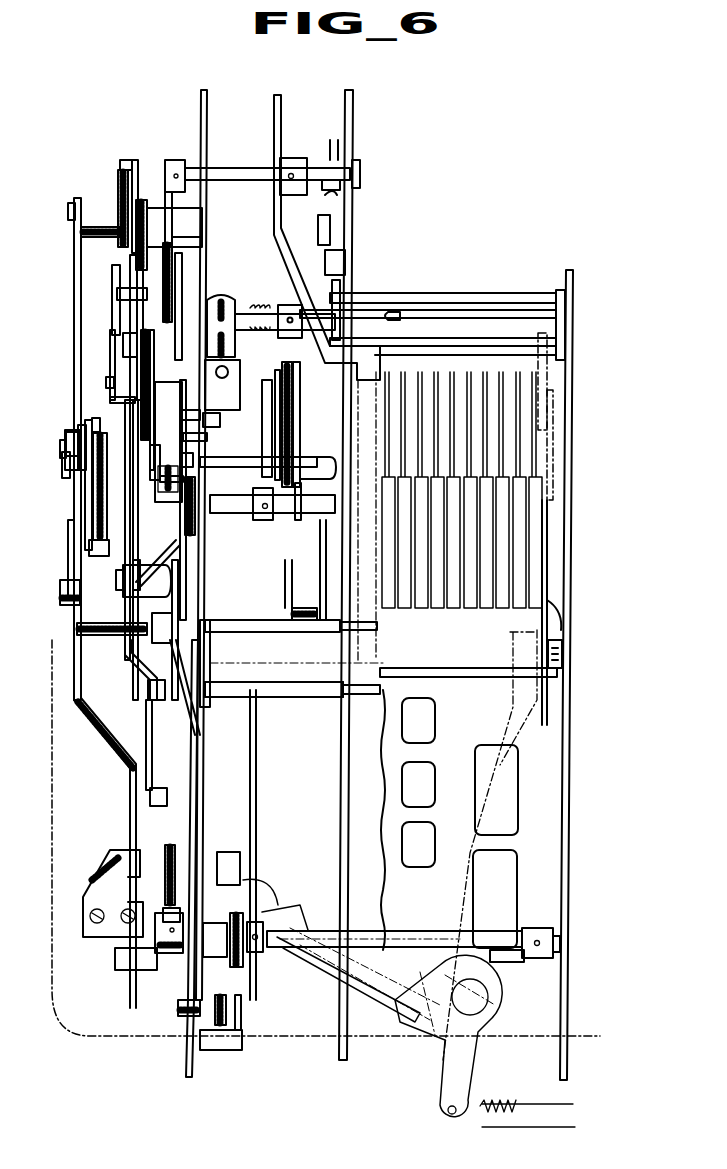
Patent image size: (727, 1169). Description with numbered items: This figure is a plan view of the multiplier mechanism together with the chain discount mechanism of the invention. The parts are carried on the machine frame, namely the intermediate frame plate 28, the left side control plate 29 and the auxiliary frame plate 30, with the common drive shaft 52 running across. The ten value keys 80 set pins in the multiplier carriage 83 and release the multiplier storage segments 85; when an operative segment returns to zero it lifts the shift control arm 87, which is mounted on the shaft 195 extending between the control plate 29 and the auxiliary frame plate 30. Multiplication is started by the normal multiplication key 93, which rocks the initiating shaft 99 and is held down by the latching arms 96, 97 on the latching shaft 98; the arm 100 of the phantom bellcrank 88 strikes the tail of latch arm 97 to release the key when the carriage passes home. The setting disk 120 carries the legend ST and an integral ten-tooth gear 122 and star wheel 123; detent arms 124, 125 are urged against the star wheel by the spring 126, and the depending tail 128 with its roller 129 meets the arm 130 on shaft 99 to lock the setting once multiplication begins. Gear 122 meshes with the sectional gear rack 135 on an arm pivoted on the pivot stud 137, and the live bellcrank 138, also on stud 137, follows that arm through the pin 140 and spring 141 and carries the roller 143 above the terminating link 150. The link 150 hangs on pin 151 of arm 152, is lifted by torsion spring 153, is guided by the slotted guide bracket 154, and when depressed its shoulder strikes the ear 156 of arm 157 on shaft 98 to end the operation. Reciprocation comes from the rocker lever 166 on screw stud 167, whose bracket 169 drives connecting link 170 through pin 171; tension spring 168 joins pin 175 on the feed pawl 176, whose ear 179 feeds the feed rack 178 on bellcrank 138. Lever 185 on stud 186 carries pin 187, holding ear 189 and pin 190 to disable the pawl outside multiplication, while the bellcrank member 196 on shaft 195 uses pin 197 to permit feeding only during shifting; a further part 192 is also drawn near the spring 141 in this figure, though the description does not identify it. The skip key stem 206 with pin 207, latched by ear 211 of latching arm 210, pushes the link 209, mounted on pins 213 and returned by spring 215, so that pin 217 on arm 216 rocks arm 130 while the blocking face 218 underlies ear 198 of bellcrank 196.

The intermediate frame plate 28 is at (566, 1032).
The left side control plate 29 is at (196, 1070).
The auxiliary frame plate 30 is at (350, 133).
The drive shaft 52 is at (390, 316).
The value keys 80 is at (440, 716).
The multiplier carriage 83 is at (559, 470).
The multiplier storage segment 85 is at (550, 382).
The shift control arm 87 is at (300, 268).
The bellcrank 88 is at (500, 1000).
The normal multiplication key 93 is at (487, 878).
The latching arm 96 is at (515, 970).
The latching arm 97 is at (215, 948).
The latching shaft 98 is at (374, 936).
The initiating shaft 99 is at (305, 699).
The arm of bellcrank 100 is at (348, 980).
The setting disk 120 is at (183, 388).
The ten-tooth gear 122 is at (150, 482).
The star wheel 123 is at (196, 440).
The detent arm 124 is at (196, 502).
The detent arm 125 is at (186, 540).
The spring 126 is at (200, 470).
The depending tail 128 is at (165, 536).
The roller 129 is at (135, 562).
The arm 130 is at (125, 655).
The sectional gear rack 135 is at (152, 372).
The pivot stud 137 is at (67, 447).
The bellcrank 138 is at (85, 506).
The pin 140 is at (93, 421).
The spring 141 is at (95, 516).
The roller 143 is at (68, 600).
The terminating link 150 is at (112, 770).
The pin 151 is at (62, 467).
The arm 152 is at (78, 432).
The torsion spring 153 is at (68, 559).
The slotted guide bracket 154 is at (96, 874).
The ear 156 is at (115, 964).
The arm 157 is at (160, 955).
The rocker lever 166 is at (143, 200).
The screw stud 167 is at (177, 224).
The tension spring 168 is at (120, 198).
The bracket 169 is at (98, 236).
The connecting link 170 is at (74, 282).
The pin 171 is at (68, 212).
The pin 175 is at (125, 170).
The feed pawl 176 is at (130, 266).
The feed rack 178 is at (112, 312).
The ear 179 is at (106, 381).
The lever 185 is at (146, 724).
The stud 186 is at (123, 585).
The pin 187 is at (158, 808).
The ear 189 is at (110, 400).
The pin 190 is at (125, 348).
The nut 192 is at (97, 556).
The shaft 195 is at (242, 176).
The bellcrank member 196 is at (167, 157).
The pin 197 is at (157, 302).
The ear 198 is at (190, 245).
The key stem 206 is at (238, 1012).
The pin 207 is at (178, 1020).
The link 209 is at (190, 775).
The latching arm 210 is at (244, 1020).
The ear 211 is at (216, 1044).
The pins 213 is at (170, 914).
The spring 215 is at (168, 868).
The arm 216 is at (165, 637).
The pin 217 is at (92, 630).
The blocking face 218 is at (182, 268).